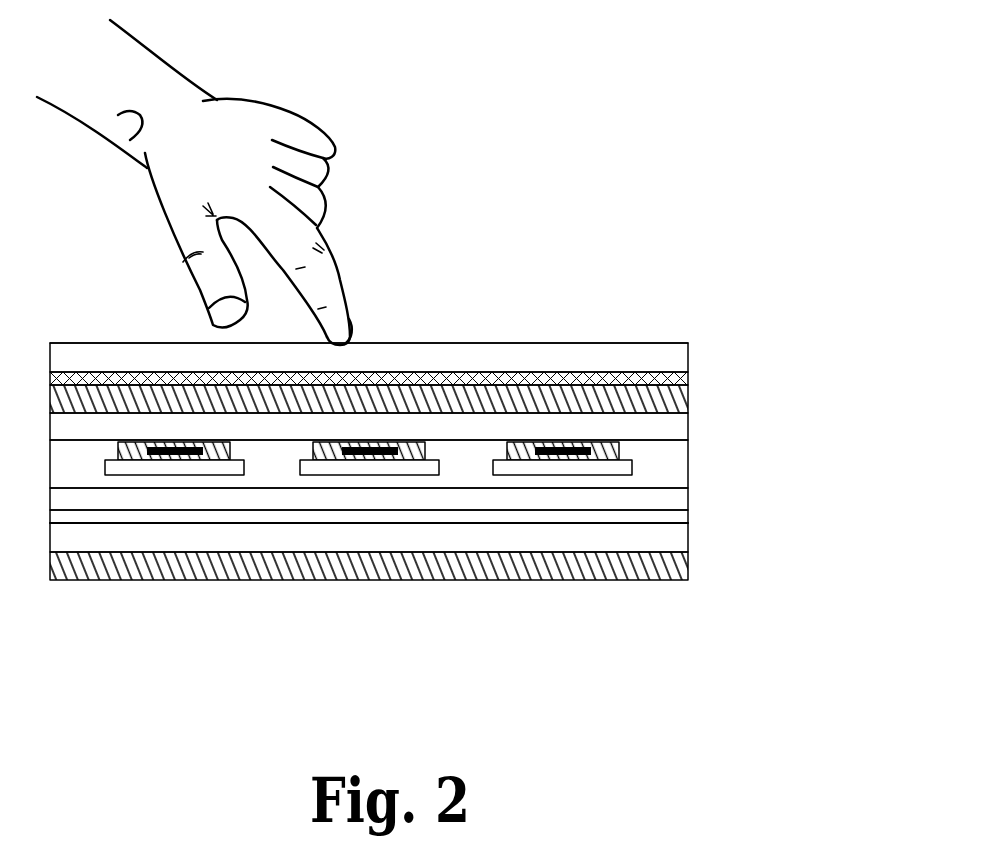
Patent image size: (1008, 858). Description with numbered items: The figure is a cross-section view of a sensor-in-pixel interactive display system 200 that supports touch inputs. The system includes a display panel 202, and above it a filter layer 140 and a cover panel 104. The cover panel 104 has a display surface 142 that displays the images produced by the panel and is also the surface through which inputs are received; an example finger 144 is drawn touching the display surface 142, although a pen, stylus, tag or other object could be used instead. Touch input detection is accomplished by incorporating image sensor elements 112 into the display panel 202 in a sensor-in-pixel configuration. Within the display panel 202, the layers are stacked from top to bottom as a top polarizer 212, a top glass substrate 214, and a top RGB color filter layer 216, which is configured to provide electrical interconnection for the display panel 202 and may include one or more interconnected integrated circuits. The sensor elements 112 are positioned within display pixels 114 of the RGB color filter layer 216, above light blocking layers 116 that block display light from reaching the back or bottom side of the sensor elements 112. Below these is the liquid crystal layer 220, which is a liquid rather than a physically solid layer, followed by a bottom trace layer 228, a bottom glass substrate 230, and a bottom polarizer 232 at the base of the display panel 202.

The SIP interactive display system 200 is at (692, 242).
The display panel 202 is at (476, 475).
The cover panel 104 is at (688, 353).
The filter layer 140 is at (688, 377).
The display surface 142 is at (416, 336).
The finger 144 is at (350, 292).
The top polarizer 212 is at (688, 400).
The top glass substrate 214 is at (688, 427).
The top RGB color filter layer 216 is at (688, 463).
The liquid crystal layer 220 is at (688, 493).
The bottom trace layer 228 is at (688, 515).
The bottom glass substrate 230 is at (688, 538).
The bottom polarizer 232 is at (417, 559).
The image sensor elements 112 is at (387, 457).
The display pixels 114 is at (325, 457).
The light blocking layers 116 is at (423, 468).